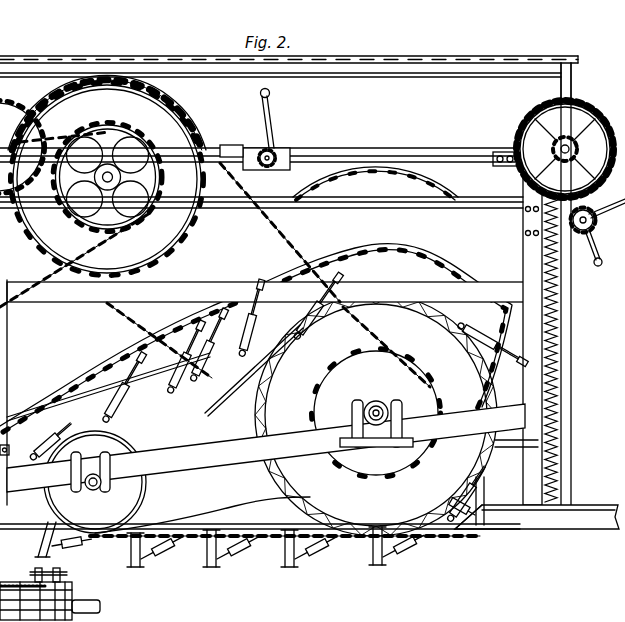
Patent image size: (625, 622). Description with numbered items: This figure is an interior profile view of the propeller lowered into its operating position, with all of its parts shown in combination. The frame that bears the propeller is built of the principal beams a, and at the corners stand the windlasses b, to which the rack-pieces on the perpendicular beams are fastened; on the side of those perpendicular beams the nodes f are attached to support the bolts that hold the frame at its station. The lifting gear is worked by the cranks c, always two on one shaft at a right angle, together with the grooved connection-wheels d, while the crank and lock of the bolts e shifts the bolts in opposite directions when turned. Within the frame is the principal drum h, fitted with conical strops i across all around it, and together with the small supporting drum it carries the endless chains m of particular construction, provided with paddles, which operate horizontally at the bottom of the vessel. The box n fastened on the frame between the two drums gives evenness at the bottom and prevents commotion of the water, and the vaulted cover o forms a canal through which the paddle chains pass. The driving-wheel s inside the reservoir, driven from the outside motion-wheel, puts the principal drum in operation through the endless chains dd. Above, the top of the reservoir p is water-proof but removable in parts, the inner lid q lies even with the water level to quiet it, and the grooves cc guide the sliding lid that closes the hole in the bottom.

The top of the reservoir p is at (289, 55).
The principal beams a is at (309, 296).
The lid inside the reservoir q is at (261, 192).
The driving-wheel s is at (103, 175).
The windlasses b is at (565, 131).
The grooved connection-wheels d is at (348, 394).
The crank and lock of the bolts e is at (324, 379).
The cranks c is at (293, 355).
The principal drum h is at (376, 415).
The conical strops i is at (95, 482).
The vaulted cover o is at (256, 350).
The endless chains dd is at (215, 275).
The endless chains m is at (279, 419).
The box n is at (155, 405).
The grooves cc is at (260, 522).
The nodes f is at (261, 307).